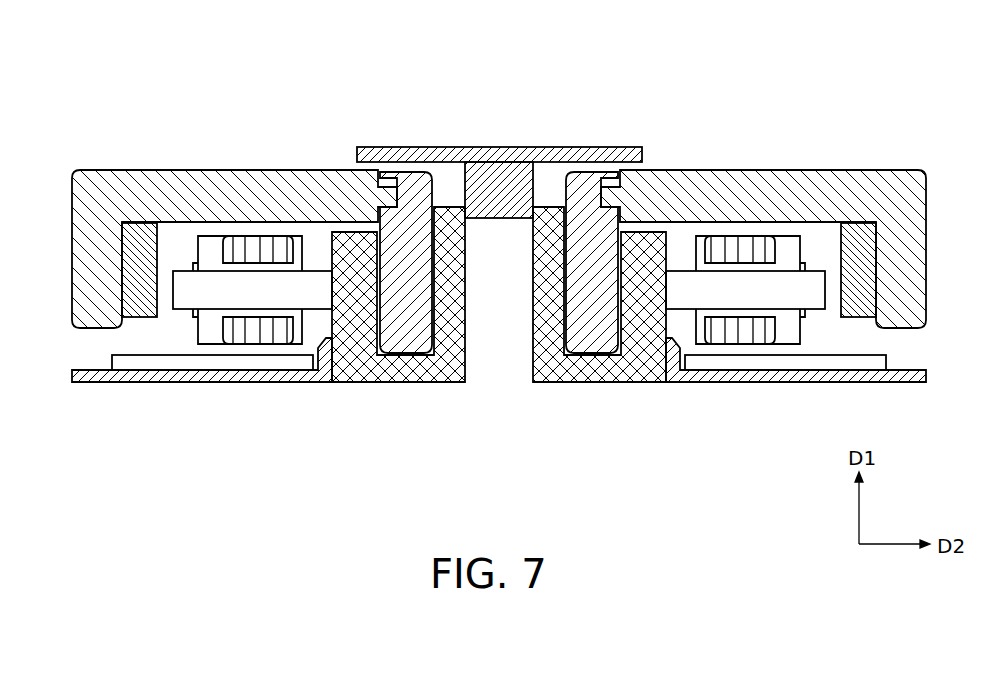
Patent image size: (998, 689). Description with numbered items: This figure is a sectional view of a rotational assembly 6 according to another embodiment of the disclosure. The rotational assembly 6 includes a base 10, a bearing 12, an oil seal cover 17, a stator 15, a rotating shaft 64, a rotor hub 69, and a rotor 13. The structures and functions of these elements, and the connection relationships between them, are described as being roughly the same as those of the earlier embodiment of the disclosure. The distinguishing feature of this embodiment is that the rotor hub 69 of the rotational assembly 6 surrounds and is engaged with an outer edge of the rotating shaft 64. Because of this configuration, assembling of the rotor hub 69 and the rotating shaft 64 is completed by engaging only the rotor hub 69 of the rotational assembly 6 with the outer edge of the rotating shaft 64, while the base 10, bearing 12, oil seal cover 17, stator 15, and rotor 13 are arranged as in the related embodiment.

The rotational assembly 6 is at (55, 49).
The base 10 is at (252, 382).
The bearing 12 is at (392, 383).
The rotor 13 is at (137, 247).
The stator 15 is at (240, 247).
The oil seal cover 17 is at (497, 190).
The rotating shaft 64 is at (410, 205).
The rotor hub 69 is at (261, 200).